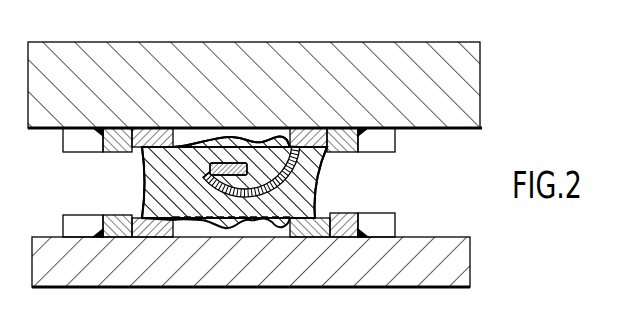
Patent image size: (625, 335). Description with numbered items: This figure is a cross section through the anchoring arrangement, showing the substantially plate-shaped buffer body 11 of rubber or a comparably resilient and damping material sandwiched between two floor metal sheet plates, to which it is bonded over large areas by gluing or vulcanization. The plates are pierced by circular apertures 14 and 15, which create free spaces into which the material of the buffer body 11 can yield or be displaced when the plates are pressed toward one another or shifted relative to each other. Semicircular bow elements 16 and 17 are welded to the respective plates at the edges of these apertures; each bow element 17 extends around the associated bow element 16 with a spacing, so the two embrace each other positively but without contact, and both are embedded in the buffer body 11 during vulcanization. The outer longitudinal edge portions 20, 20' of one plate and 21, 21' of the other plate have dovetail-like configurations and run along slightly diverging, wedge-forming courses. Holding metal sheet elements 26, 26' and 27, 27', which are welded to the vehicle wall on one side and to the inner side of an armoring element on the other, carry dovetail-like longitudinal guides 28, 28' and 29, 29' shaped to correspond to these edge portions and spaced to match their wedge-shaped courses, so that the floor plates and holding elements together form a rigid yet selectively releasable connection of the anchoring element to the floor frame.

The buffer body 11 is at (145, 180).
The circular aperture 14 is at (217, 177).
The circular aperture 15 is at (201, 198).
The semicircular bow element 16 is at (243, 142).
The semicircular bow element 17 is at (213, 196).
The outer longitudinal edge portion 20 is at (113, 271).
The outer longitudinal edge portion 20' is at (359, 270).
The outer longitudinal edge portion 21 is at (107, 81).
The outer longitudinal edge portion 21' is at (360, 81).
The holding metal sheet element 26 is at (69, 210).
The holding metal sheet element 26' is at (388, 208).
The holding metal sheet element 27 is at (69, 155).
The holding metal sheet element 27' is at (389, 154).
The dovetail-like longitudinal guide 28 is at (151, 273).
The dovetail-like longitudinal guide 28' is at (311, 273).
The dovetail-like longitudinal guide 29 is at (152, 79).
The dovetail-like longitudinal guide 29' is at (316, 79).